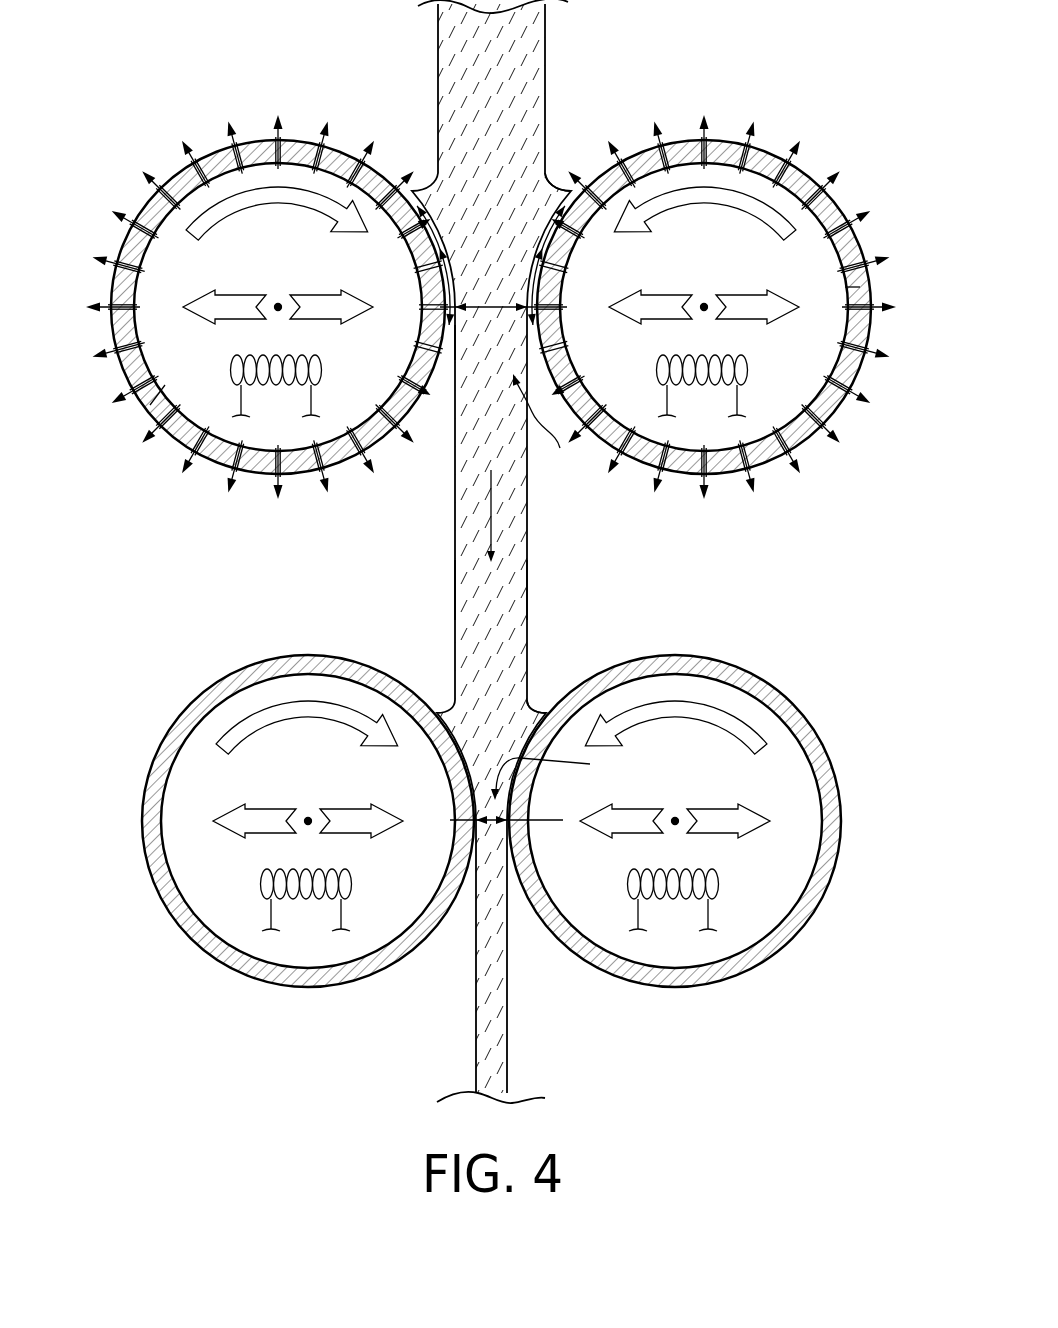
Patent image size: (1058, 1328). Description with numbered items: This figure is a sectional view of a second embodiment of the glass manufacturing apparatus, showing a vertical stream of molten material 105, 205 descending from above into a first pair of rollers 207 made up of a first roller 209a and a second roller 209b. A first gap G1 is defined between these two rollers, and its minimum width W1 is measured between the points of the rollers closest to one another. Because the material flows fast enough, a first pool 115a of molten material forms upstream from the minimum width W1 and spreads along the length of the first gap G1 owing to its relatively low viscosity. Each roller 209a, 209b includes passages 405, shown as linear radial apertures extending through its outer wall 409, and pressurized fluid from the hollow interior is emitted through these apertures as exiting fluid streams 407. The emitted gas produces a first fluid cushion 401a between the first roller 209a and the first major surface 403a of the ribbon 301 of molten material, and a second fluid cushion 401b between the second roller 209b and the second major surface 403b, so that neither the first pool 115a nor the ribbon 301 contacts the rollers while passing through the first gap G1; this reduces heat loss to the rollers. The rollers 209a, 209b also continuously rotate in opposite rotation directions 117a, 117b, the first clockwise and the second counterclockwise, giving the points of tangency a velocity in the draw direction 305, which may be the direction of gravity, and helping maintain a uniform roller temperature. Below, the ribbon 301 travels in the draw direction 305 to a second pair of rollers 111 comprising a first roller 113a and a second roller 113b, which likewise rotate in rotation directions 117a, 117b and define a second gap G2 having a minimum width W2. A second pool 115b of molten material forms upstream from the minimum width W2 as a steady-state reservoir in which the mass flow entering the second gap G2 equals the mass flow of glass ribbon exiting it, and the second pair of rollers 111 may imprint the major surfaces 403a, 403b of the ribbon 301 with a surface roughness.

The molten material 105 is at (499, 551).
The molten material 205 is at (499, 551).
The first pair of rollers 207 is at (500, 275).
The first roller 209a is at (265, 305).
The second roller 209b is at (716, 305).
The exiting fluid streams 407 is at (118, 262).
The outer wall 409 is at (152, 405).
The passages 405 is at (228, 453).
The rotation direction 117a is at (271, 206).
The rotation direction 117b is at (721, 206).
The first fluid cushion 401a is at (426, 232).
The second fluid cushion 401b is at (548, 228).
The first pool of molten material 115a is at (547, 178).
The second pool of molten material 115b is at (547, 700).
The ribbon of molten material 301 is at (472, 341).
The draw direction 305 is at (490, 510).
The first major surface 403a is at (444, 587).
The second major surface 403b is at (538, 587).
The minimum width of the first gap W1 is at (490, 304).
The minimum width of the second gap W2 is at (489, 824).
The first gap G1 is at (544, 427).
The second gap G2 is at (555, 776).
The second pair of rollers 111 is at (489, 772).
The first roller 113a is at (185, 708).
The second roller 113b is at (794, 710).